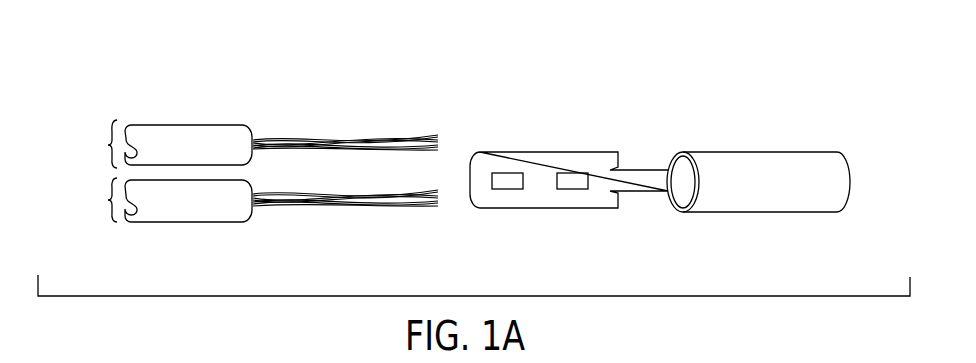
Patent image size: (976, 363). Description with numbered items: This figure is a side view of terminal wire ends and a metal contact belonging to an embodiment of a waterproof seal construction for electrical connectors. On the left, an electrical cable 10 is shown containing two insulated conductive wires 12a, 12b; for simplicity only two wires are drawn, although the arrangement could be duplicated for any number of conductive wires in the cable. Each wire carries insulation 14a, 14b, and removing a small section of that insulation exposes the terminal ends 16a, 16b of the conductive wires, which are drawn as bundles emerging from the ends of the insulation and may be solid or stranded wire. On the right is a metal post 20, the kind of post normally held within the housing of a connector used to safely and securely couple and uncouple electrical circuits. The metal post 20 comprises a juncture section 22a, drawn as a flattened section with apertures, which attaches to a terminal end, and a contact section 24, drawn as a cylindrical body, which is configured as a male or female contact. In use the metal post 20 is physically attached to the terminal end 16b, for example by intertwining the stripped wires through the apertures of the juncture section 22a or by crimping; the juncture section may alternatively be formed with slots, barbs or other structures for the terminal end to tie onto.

The electrical cable 10 is at (113, 87).
The insulated conductive wire 12a is at (108, 145).
The insulated conductive wire 12b is at (108, 200).
The insulation 14a is at (180, 138).
The insulation 14b is at (180, 207).
The terminal end 16a is at (347, 135).
The terminal end 16b is at (340, 205).
The metal post 20 is at (795, 187).
The juncture section 22a is at (540, 168).
The contact section 24 is at (788, 200).